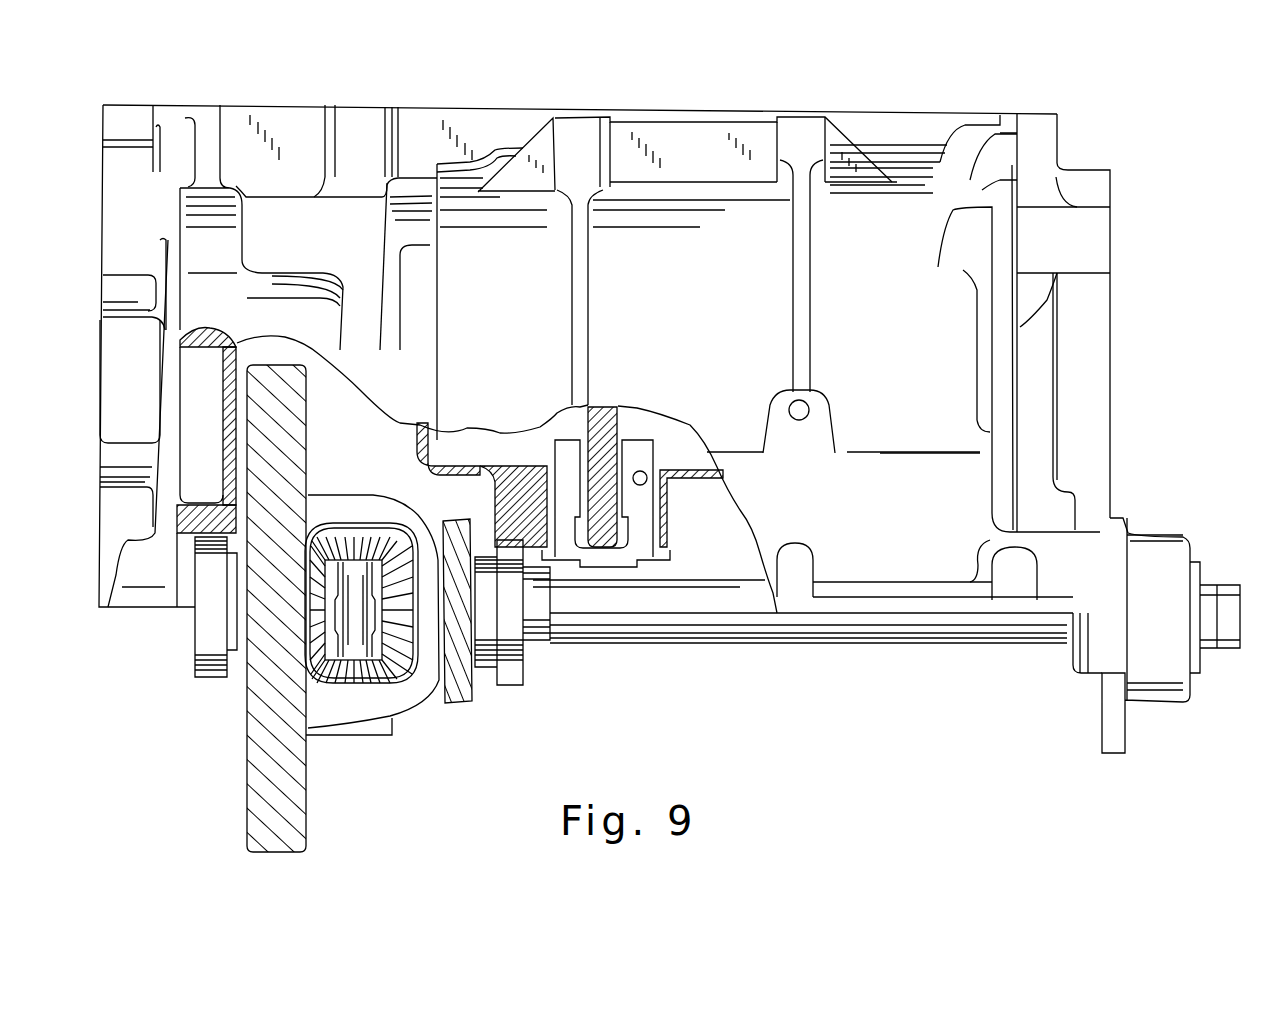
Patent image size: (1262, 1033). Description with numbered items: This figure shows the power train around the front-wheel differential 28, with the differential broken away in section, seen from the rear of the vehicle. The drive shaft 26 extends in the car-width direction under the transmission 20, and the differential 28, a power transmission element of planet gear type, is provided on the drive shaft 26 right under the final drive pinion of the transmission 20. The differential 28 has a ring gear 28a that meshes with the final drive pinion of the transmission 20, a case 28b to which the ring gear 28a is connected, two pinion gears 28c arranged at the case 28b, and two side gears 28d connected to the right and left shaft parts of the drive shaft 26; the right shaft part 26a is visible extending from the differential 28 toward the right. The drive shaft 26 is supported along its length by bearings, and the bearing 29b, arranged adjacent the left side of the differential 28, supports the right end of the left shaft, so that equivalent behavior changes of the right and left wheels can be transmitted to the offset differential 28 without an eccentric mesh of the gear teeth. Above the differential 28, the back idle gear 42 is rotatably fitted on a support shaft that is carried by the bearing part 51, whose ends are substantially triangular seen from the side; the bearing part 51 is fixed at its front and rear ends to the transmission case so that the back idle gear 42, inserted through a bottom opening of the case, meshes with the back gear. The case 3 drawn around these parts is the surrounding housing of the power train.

The transmission case 3 is at (300, 103).
The transmission 20 is at (717, 107).
The back idle gear 42 is at (601, 415).
The bearing part 51 is at (637, 540).
The bearing 29b is at (515, 490).
The ring gear 28a is at (260, 778).
The differential 28 is at (381, 733).
The case 28b is at (348, 505).
The pinion gears 28c is at (362, 600).
The side gears 28d is at (312, 677).
The drive shaft 26 is at (787, 650).
The right shaft part 26a is at (987, 630).